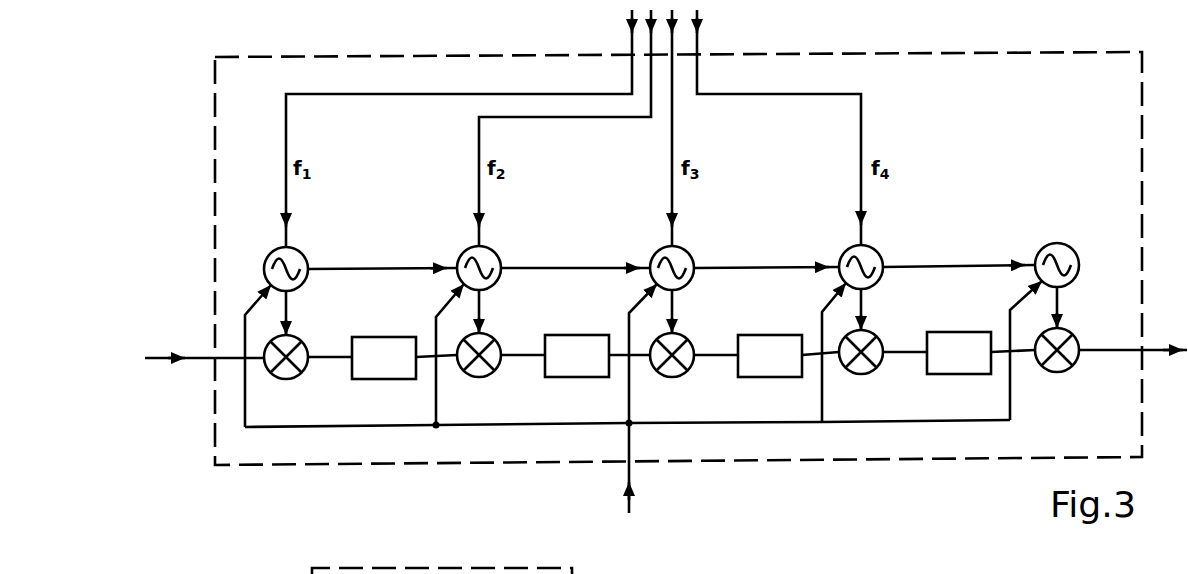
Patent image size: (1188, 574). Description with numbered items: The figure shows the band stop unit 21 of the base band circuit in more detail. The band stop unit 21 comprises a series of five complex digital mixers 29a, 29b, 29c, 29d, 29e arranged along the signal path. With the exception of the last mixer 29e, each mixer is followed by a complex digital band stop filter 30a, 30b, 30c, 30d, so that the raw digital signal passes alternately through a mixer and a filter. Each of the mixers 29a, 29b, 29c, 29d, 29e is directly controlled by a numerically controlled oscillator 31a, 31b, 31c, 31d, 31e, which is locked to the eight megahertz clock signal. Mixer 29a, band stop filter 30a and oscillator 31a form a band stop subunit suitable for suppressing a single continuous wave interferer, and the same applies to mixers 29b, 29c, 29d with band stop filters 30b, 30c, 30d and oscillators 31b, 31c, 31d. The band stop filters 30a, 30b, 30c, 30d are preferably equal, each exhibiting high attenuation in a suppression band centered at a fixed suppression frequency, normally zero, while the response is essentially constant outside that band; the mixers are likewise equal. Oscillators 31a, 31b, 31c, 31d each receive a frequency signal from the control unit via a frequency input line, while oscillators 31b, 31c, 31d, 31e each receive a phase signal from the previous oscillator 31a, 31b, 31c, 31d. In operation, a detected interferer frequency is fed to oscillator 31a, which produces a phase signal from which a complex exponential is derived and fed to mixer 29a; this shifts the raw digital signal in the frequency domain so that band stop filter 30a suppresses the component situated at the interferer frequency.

The band stop unit 21 is at (258, 471).
The complex digital mixer 29a is at (285, 372).
The complex digital mixer 29b is at (478, 370).
The complex digital mixer 29c is at (671, 370).
The complex digital mixer 29d is at (860, 367).
The last mixer 29e is at (1055, 365).
The complex digital band stop filter 30a is at (375, 370).
The complex digital band stop filter 30b is at (568, 368).
The complex digital band stop filter 30c is at (758, 368).
The complex digital band stop filter 30d is at (956, 365).
The numerically controlled oscillator 31a is at (298, 262).
The numerically controlled oscillator 31b is at (491, 261).
The numerically controlled oscillator 31c is at (684, 261).
The numerically controlled oscillator 31d is at (871, 259).
The numerically controlled oscillator 31e is at (1068, 258).